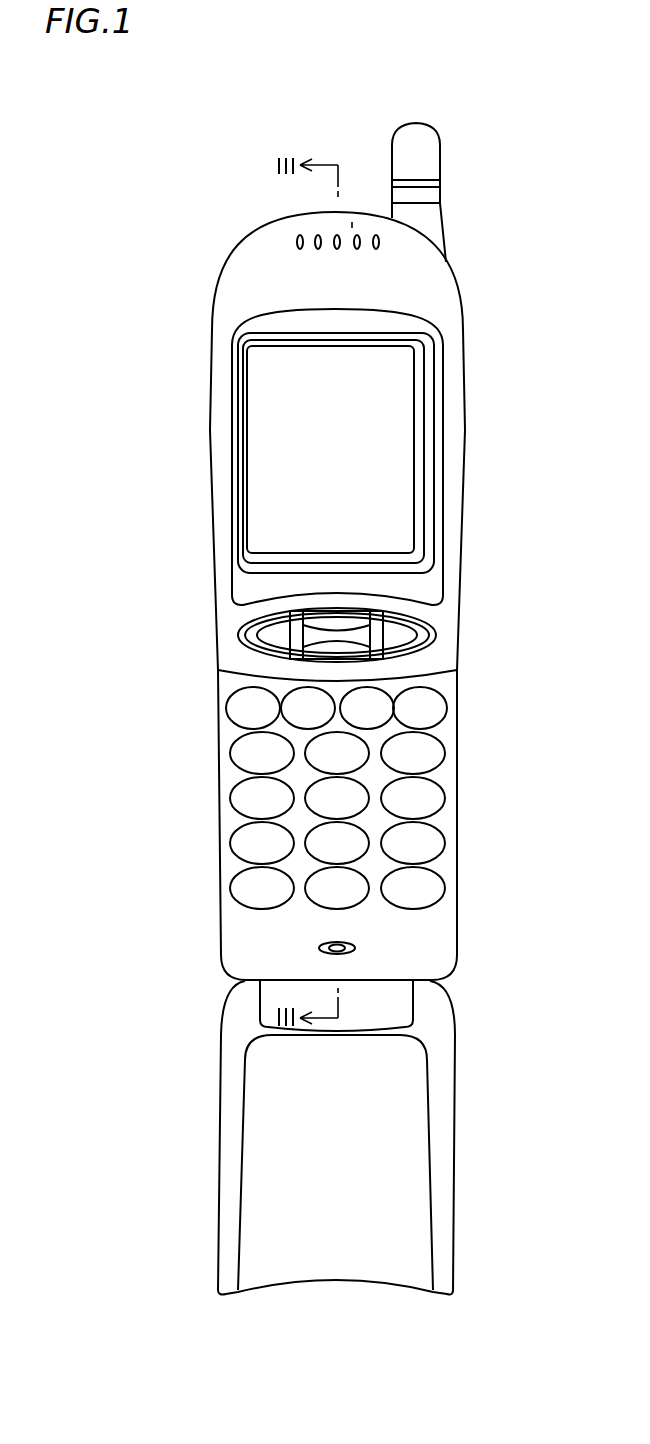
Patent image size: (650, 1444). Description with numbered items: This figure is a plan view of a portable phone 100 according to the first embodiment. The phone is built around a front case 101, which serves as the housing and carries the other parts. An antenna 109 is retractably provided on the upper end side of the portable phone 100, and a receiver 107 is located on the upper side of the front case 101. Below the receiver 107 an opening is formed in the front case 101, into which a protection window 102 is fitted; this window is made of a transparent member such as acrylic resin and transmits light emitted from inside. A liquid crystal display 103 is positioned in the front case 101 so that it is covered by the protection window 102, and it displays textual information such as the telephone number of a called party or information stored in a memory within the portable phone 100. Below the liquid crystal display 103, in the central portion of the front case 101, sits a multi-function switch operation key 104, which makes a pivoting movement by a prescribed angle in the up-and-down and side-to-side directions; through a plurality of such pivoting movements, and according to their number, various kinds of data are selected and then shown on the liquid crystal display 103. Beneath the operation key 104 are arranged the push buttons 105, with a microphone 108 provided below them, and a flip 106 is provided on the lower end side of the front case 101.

The portable phone 100 is at (460, 102).
The front case 101 is at (455, 280).
The protection window 102 is at (444, 420).
The liquid crystal display 103 is at (286, 465).
The multi-function switch operation key 104 is at (325, 637).
The push buttons 105 is at (420, 705).
The flip 106 is at (455, 1090).
The receiver 107 is at (296, 243).
The microphone 108 is at (327, 947).
The antenna 109 is at (415, 160).